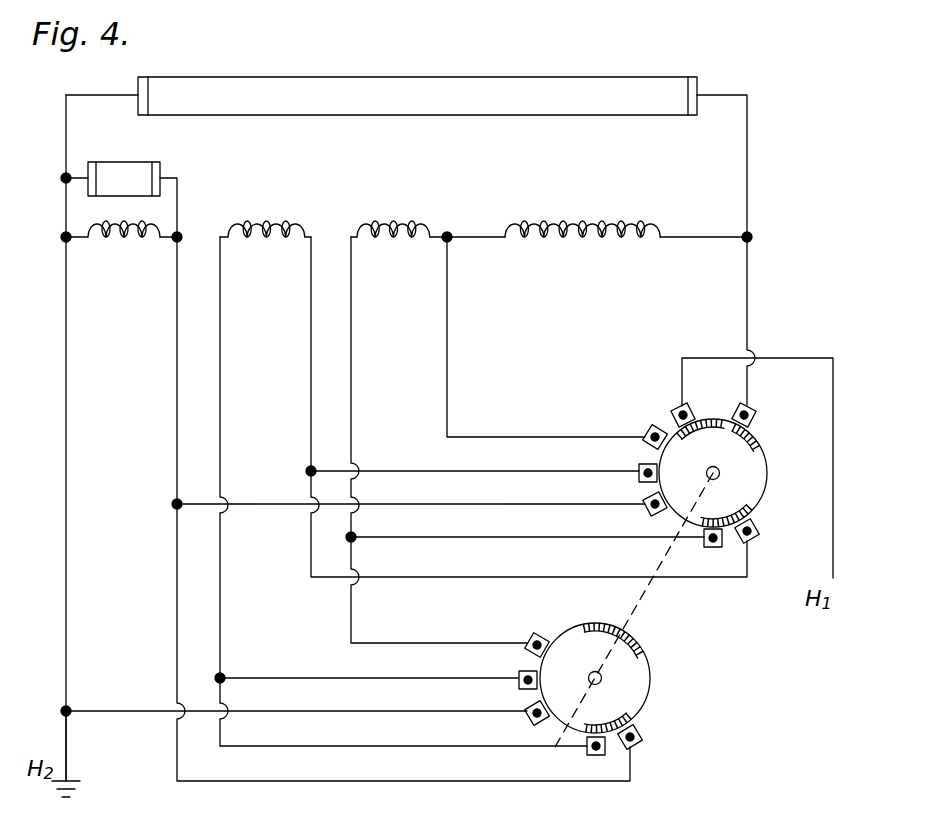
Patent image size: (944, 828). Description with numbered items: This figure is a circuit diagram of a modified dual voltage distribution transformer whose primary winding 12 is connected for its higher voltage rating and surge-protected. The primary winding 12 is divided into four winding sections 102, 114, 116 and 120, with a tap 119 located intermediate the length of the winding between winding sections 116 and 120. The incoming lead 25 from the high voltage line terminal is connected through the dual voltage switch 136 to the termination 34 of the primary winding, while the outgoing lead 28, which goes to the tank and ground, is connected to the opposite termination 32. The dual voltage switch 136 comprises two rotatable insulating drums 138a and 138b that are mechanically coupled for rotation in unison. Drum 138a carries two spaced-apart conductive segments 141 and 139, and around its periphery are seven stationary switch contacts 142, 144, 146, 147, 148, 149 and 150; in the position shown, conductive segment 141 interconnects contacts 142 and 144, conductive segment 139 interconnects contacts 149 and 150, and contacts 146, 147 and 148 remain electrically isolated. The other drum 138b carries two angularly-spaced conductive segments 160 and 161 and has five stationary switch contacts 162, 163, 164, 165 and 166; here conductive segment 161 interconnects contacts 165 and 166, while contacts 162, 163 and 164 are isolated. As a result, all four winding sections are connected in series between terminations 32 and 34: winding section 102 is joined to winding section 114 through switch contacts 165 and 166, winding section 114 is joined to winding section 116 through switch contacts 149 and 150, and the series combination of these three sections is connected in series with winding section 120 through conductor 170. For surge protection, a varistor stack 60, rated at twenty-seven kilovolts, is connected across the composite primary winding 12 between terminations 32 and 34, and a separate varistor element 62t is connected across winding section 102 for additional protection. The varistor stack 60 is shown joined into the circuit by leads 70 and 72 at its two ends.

The varistor stack 60 is at (299, 77).
The lamp lead wire 70 is at (88, 95).
The lamp lead wire 72 is at (723, 95).
The separate varistor element 62t is at (124, 167).
The termination 32 is at (65, 242).
The termination 34 is at (755, 240).
The winding section 102 is at (143, 241).
The winding section 114 is at (282, 244).
The winding section 116 is at (405, 244).
The tap 119 is at (450, 240).
The conductor 170 is at (482, 237).
The winding section 120 is at (587, 241).
The primary winding 12 is at (426, 270).
The incoming lead 25 is at (777, 358).
The rotatable insulating drum 138a is at (760, 487).
The conductive segment 139 is at (732, 502).
The conductive segment 141 is at (730, 435).
The stationary switch contact 142 is at (760, 413).
The stationary switch contact 144 is at (677, 410).
The stationary switch contact 146 is at (650, 430).
The stationary switch contact 147 is at (638, 468).
The stationary switch contact 148 is at (640, 498).
The stationary switch contact 149 is at (712, 548).
The stationary switch contact 150 is at (757, 533).
The dual voltage switch 136 is at (710, 589).
The rotatable insulating drum 138b is at (640, 680).
The conductive segment 160 is at (641, 640).
The conductive segment 161 is at (643, 707).
The stationary switch contact 162 is at (527, 636).
The stationary switch contact 163 is at (519, 675).
The stationary switch contact 164 is at (524, 710).
The stationary switch contact 165 is at (586, 753).
The stationary switch contact 166 is at (649, 738).
The outgoing lead 28 is at (75, 746).